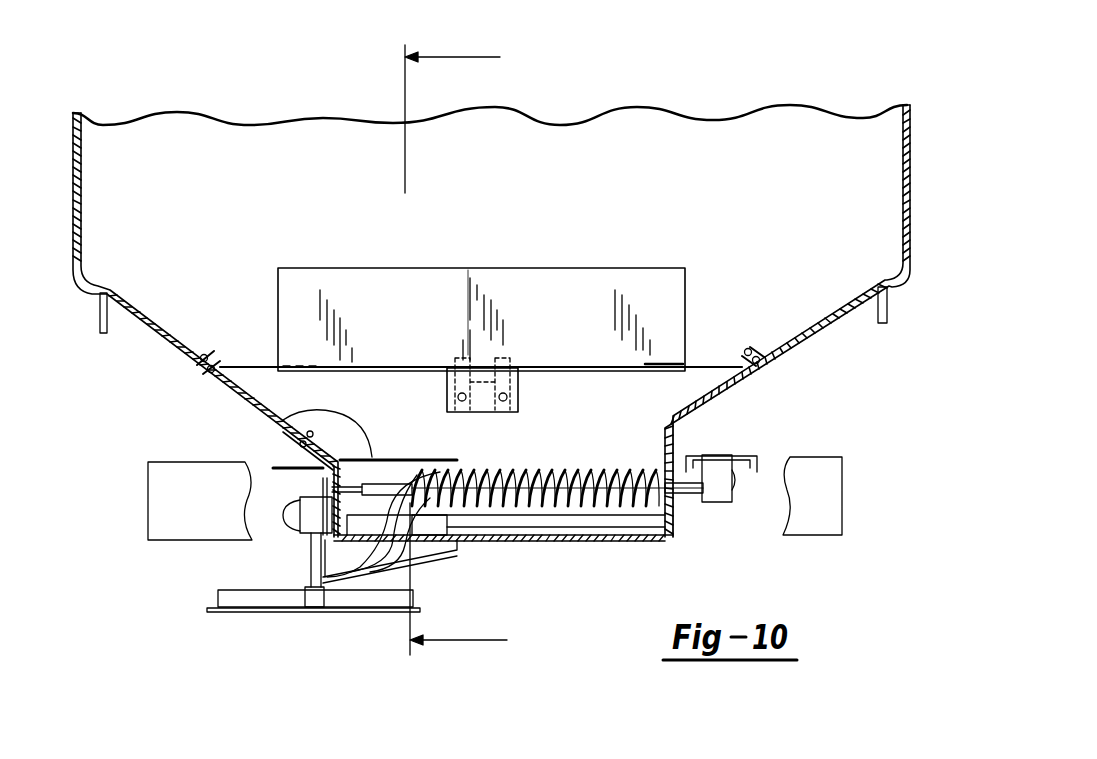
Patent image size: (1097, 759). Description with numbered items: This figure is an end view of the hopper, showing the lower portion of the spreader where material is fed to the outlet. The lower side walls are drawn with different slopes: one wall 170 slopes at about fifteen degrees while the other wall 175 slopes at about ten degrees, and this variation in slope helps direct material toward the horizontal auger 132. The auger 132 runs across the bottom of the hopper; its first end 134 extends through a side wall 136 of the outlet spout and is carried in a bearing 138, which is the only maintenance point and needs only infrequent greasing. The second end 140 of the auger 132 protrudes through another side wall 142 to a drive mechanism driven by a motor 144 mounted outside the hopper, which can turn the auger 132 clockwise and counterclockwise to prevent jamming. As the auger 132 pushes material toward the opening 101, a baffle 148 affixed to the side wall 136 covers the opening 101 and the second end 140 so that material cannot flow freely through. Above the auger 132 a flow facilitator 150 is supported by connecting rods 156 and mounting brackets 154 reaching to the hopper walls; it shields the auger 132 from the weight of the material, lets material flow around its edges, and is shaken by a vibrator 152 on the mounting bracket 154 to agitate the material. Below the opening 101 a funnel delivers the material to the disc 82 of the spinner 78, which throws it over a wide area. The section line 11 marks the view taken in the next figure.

The section line 11- 11 is at (478, 350).
The spinner 78 is at (240, 530).
The disc 82 is at (275, 613).
The opening 101 is at (420, 540).
The horizontal auger 132 is at (556, 515).
The first end 134 is at (311, 555).
The side wall 136 is at (333, 523).
The bearing 138 is at (322, 486).
The second end 140 is at (684, 496).
The side wall 142 is at (674, 437).
The motor 144 is at (722, 502).
The baffle 148 is at (287, 427).
The flow facilitator 150 is at (432, 267).
The vibrator 152 is at (520, 393).
The mounting bracket 154 is at (213, 358).
The connecting rod 156 is at (258, 364).
The wall 170 is at (163, 337).
The wall 175 is at (825, 320).